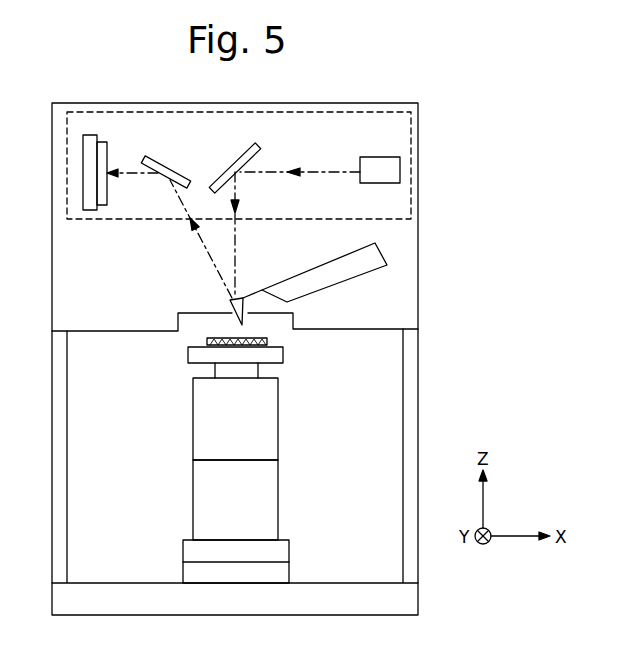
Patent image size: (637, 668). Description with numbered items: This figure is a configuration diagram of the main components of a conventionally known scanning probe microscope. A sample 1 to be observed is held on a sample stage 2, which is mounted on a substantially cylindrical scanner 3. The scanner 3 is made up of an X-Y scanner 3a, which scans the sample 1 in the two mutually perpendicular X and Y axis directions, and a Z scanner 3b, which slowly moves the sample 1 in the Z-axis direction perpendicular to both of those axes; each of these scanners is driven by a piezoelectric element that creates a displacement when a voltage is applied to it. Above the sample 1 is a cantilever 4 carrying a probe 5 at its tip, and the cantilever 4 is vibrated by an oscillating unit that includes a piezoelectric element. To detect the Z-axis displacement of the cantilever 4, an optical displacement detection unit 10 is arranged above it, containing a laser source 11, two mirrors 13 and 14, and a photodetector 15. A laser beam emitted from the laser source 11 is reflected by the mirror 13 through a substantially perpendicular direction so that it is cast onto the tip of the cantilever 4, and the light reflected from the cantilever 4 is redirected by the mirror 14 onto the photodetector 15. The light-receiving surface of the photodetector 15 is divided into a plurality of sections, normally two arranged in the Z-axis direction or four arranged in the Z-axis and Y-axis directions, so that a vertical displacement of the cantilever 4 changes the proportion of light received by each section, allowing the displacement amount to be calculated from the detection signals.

The sample 1 is at (267, 340).
The sample stage 2 is at (283, 355).
The scanner 3 is at (273, 459).
The X-Y scanner 3a is at (257, 500).
The Z scanner 3b is at (275, 430).
The cantilever 4 is at (253, 292).
The probe 5 is at (230, 305).
The optical displacement detection unit 10 is at (423, 152).
The laser source 11 is at (382, 157).
The mirror 13 is at (252, 152).
The mirror 14 is at (168, 149).
The photodetector 15 is at (105, 147).